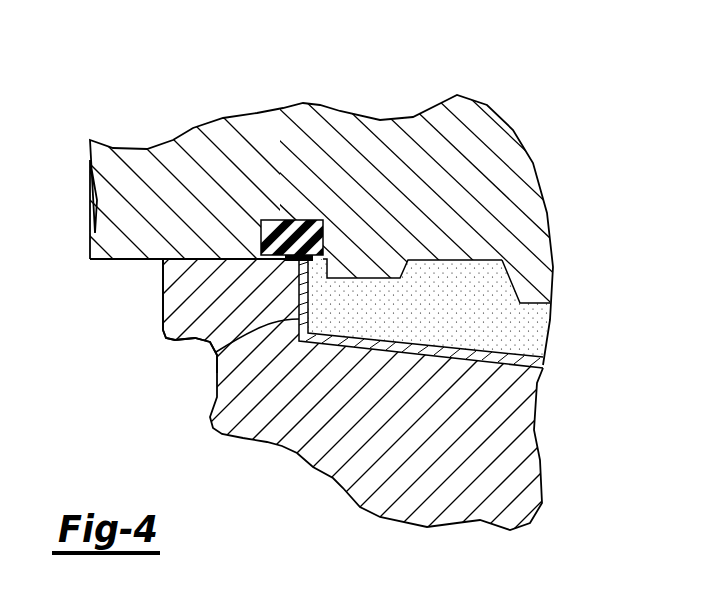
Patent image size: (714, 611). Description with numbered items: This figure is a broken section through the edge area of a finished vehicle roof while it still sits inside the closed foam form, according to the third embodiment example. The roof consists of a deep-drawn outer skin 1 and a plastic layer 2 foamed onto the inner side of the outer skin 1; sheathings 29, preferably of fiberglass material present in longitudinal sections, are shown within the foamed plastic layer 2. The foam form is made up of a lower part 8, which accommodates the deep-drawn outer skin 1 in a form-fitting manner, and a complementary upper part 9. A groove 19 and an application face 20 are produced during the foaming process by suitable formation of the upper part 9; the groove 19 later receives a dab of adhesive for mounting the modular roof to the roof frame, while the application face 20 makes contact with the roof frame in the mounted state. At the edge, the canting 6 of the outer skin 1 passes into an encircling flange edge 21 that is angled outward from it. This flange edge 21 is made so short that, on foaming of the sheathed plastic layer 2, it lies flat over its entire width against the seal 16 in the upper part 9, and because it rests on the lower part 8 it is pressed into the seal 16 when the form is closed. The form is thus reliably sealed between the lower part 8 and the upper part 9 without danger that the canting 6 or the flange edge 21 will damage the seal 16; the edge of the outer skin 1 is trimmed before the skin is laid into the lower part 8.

The outer skin 1 is at (500, 364).
The plastic layer 2 is at (527, 313).
The canting 6 is at (216, 360).
The lower part 8 is at (173, 310).
The upper part 9 is at (173, 158).
The seal 16 is at (293, 220).
The groove 19 is at (360, 262).
The application face 20 is at (440, 259).
The flange edge 21 is at (283, 263).
The sheathings 29 is at (488, 350).